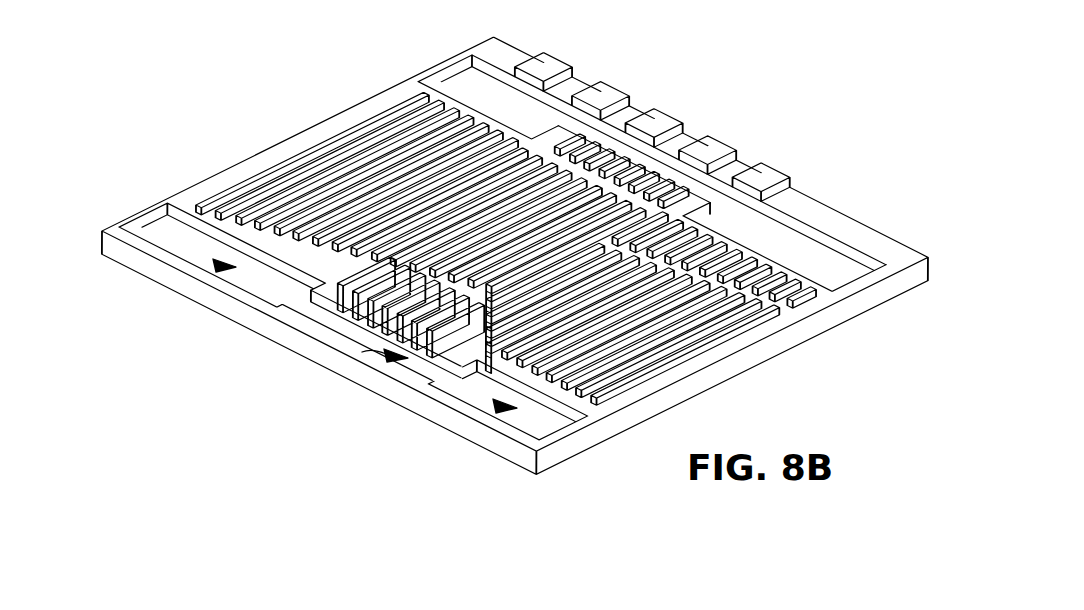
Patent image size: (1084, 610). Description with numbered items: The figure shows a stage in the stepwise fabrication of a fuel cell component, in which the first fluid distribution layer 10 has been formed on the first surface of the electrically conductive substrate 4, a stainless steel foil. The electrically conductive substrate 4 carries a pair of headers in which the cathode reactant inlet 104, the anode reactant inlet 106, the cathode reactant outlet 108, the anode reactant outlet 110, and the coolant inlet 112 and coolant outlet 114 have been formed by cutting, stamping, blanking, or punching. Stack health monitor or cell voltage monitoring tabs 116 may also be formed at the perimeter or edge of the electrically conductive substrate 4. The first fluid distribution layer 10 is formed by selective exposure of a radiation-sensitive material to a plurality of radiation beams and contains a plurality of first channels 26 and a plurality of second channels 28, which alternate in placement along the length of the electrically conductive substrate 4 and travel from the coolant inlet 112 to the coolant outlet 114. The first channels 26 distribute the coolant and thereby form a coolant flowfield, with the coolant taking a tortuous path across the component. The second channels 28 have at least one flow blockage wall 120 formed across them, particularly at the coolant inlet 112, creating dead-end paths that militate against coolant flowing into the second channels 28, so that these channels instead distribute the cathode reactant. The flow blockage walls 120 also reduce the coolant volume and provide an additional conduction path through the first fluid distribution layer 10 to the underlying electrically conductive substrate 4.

The electrically conductive substrate 4 is at (900, 252).
The first fluid distribution layer 10 is at (332, 173).
The first channels 26 is at (642, 216).
The second channels 28 is at (614, 204).
The cathode reactant inlet 104 is at (489, 108).
The anode reactant inlet 106 is at (825, 268).
The cathode reactant outlet 108 is at (495, 405).
The anode reactant outlet 110 is at (212, 262).
The coolant inlet 112 is at (656, 170).
The coolant outlet 114 is at (362, 305).
The stack health monitor or cell voltage monitoring tabs 116 is at (795, 200).
The flow blockage wall 120 is at (614, 142).